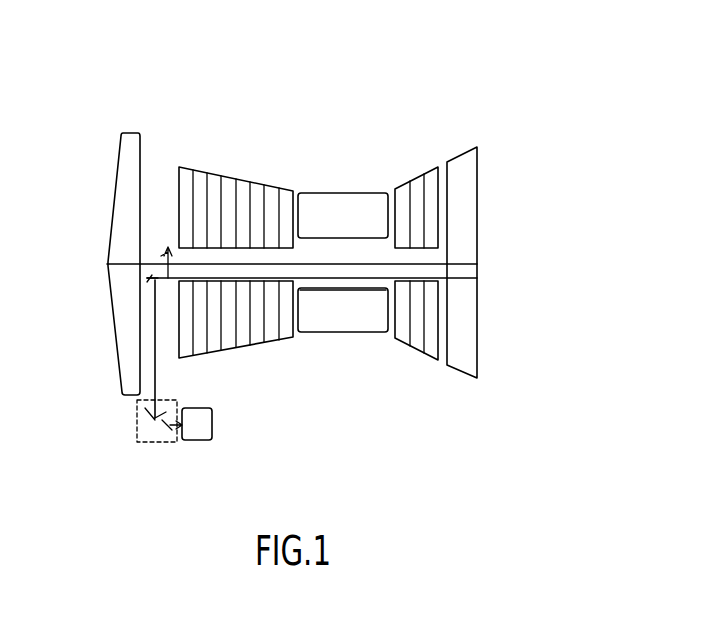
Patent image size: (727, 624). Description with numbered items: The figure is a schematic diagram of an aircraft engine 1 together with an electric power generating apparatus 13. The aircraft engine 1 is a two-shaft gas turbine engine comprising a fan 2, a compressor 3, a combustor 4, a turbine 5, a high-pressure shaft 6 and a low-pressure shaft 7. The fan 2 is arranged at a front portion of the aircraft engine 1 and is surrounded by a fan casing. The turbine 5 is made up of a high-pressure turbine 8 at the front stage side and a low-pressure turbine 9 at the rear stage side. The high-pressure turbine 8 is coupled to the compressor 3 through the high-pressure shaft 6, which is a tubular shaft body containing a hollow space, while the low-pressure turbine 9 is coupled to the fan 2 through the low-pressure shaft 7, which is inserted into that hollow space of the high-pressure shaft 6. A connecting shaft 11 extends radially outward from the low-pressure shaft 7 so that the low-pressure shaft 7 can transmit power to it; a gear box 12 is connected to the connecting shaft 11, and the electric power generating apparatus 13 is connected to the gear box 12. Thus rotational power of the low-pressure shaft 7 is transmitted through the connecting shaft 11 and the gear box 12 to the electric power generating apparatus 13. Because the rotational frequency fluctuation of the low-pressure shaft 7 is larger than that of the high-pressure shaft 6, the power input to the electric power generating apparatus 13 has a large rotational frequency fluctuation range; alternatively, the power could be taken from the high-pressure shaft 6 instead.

The aircraft engine 1 is at (417, 84).
The fan 2 is at (130, 133).
The compressor 3 is at (214, 178).
The combustor 4 is at (312, 335).
The turbine 5 is at (462, 421).
The high-pressure shaft 6 is at (325, 288).
The low-pressure shaft 7 is at (352, 265).
The high-pressure turbine 8 is at (415, 357).
The low-pressure turbine 9 is at (467, 378).
The connecting shaft 11 is at (155, 325).
The gear box 12 is at (150, 445).
The electric power generating apparatus 13 is at (190, 442).